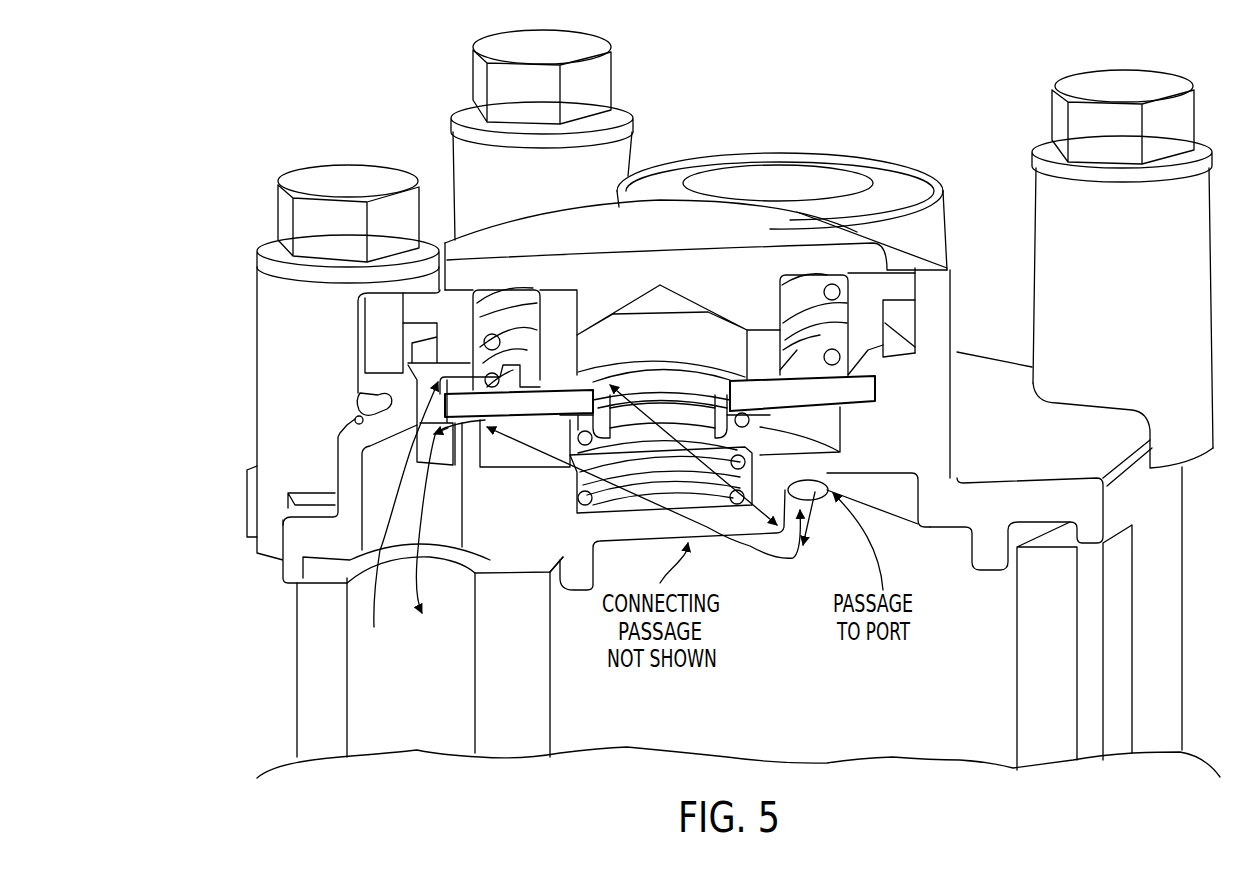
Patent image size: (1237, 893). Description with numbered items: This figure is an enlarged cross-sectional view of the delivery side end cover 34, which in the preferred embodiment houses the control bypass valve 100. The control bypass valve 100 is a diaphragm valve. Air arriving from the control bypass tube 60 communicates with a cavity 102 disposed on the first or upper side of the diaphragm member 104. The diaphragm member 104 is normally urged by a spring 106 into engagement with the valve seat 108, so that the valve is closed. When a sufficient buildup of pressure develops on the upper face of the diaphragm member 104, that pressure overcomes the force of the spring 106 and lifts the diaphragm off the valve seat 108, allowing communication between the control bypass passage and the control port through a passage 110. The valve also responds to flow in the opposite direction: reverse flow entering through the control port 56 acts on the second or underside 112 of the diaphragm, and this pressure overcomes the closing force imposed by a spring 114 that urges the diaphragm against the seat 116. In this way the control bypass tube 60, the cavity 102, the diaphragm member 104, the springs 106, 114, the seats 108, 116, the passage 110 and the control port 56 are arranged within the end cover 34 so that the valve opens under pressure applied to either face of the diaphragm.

The delivery side end cover 34 is at (940, 150).
The control port 56 is at (792, 185).
The control bypass tube 60 is at (358, 638).
The control bypass valve 100 is at (860, 423).
The cavity 102 is at (482, 333).
The diaphragm member 104 is at (867, 385).
The spring 106 is at (577, 508).
The valve seat 108 is at (580, 387).
The passage 110 is at (813, 479).
The second or underside of the diaphragm 112 is at (790, 373).
The spring 114 is at (828, 348).
The seat 116 is at (458, 423).